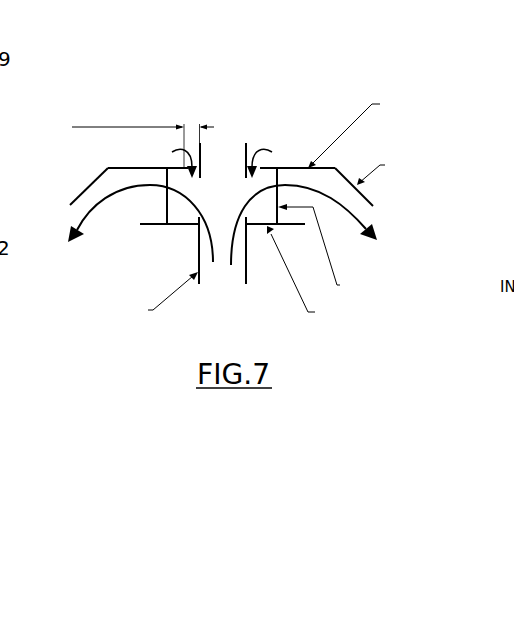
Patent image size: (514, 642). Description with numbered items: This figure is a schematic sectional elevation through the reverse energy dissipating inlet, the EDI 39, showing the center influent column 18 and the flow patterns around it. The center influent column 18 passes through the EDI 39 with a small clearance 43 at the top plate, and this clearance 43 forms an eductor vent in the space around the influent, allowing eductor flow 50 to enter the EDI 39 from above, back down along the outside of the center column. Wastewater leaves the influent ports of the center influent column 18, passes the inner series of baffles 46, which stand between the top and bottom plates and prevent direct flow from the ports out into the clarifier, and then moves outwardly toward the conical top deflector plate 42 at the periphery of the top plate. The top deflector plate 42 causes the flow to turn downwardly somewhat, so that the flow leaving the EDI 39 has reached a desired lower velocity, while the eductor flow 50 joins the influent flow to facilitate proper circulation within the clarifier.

The EDI 39 is at (412, 69).
The eductor flow 50 is at (184, 168).
The center influent column 18 is at (242, 177).
The clearance 43 is at (202, 137).
The top deflector plate 42 is at (370, 163).
The inner series of baffles 46 is at (183, 223).